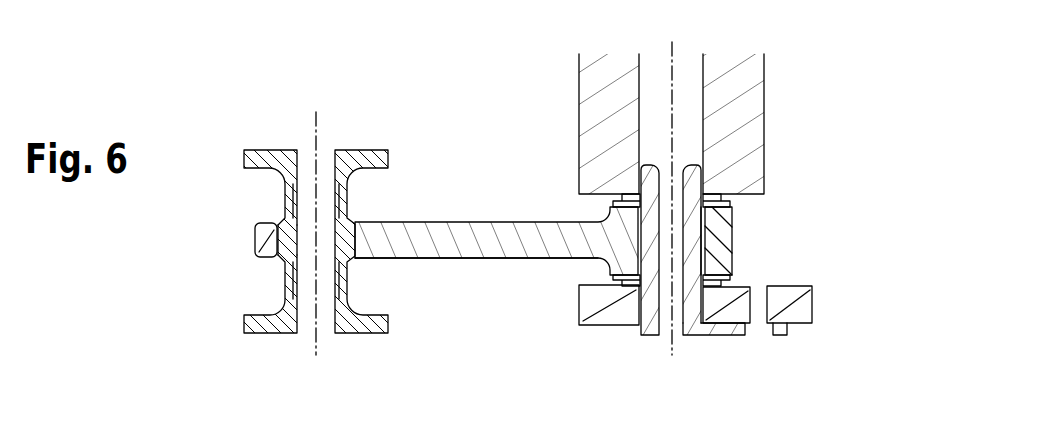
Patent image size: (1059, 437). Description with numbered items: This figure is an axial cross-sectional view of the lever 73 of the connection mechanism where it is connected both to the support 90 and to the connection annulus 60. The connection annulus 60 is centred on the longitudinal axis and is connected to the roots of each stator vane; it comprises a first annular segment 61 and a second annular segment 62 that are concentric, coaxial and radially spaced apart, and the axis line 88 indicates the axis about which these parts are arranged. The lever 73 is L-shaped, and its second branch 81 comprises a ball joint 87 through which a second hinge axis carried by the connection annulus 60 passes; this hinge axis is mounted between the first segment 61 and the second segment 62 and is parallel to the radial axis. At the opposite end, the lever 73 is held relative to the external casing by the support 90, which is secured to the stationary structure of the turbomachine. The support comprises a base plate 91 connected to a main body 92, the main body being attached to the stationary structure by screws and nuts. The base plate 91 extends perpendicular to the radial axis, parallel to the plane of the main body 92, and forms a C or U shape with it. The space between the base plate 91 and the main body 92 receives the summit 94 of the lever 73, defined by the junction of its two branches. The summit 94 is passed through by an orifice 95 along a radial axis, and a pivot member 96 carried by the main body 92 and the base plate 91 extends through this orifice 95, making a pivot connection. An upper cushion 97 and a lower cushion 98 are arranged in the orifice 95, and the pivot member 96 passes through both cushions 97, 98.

The connection annulus 60 is at (383, 336).
The first annular segment 61 is at (258, 320).
The second annular segment 62 is at (251, 156).
The lever 73 is at (436, 263).
The second branch 81 is at (470, 241).
The ball joint 87 is at (290, 231).
The axis of rotation 88 is at (318, 118).
The support 90 is at (762, 78).
The base plate 91 is at (607, 318).
The main body 92 is at (750, 181).
The summit 94 is at (718, 224).
The orifice 95 is at (708, 253).
The pivot member 96 is at (689, 318).
The upper cushion 97 is at (716, 191).
The lower cushion 98 is at (720, 296).